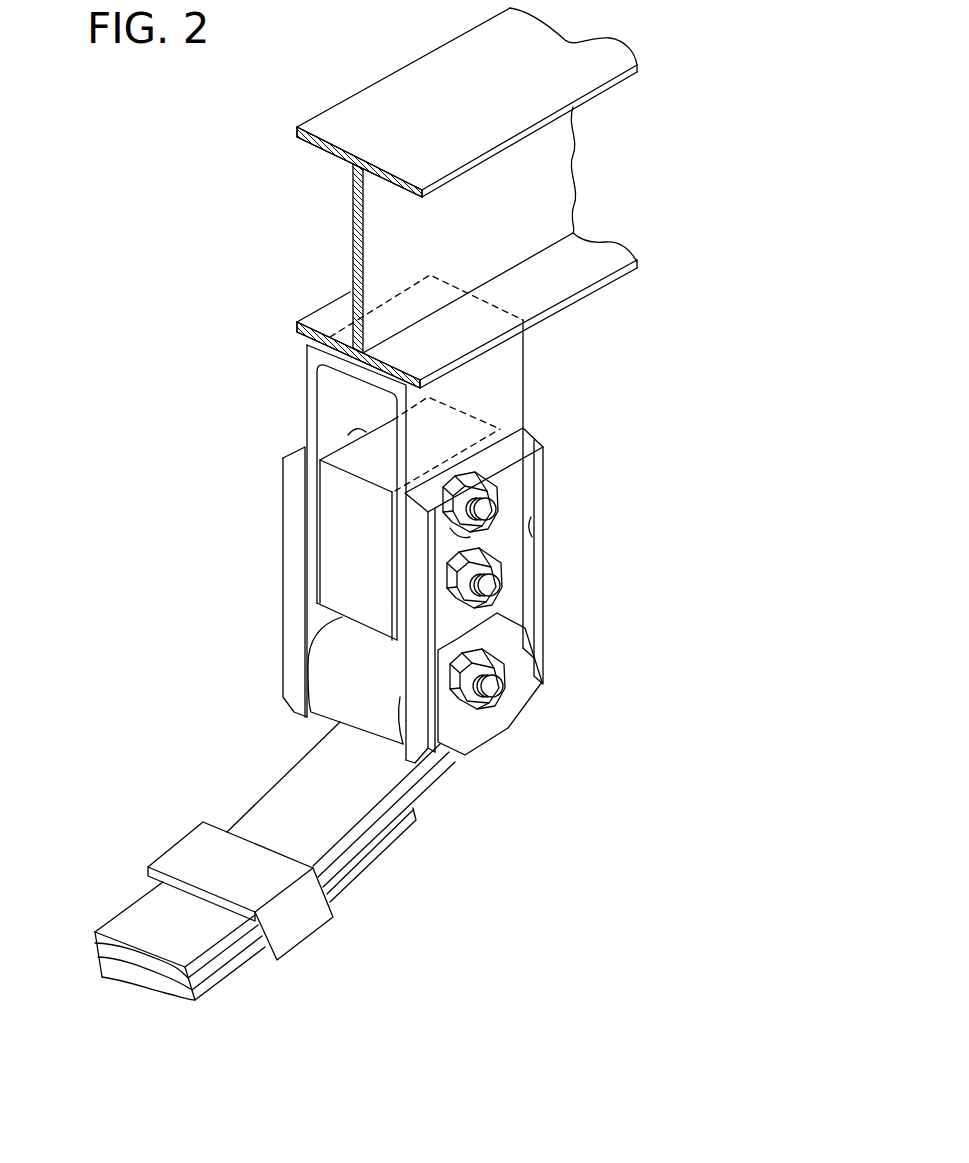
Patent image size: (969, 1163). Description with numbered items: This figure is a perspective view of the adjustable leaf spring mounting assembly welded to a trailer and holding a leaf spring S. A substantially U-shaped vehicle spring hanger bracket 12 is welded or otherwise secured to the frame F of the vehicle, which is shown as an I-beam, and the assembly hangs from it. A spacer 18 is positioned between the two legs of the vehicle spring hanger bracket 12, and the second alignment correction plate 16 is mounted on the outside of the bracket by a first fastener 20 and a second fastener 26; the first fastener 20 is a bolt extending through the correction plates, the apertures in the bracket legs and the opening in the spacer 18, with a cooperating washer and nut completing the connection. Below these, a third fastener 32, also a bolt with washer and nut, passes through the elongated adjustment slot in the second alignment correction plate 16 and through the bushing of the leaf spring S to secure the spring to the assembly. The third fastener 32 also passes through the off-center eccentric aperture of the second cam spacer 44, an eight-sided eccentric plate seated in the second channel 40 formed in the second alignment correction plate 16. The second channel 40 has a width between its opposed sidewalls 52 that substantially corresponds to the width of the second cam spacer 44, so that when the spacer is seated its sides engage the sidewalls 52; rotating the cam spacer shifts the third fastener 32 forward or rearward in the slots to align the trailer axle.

The frame F is at (368, 215).
The vehicle spring hanger bracket 12 is at (308, 386).
The second alignment correction plate 16 is at (523, 428).
The spacer 18 is at (355, 552).
The first fastener 20 is at (490, 560).
The second fastener 26 is at (432, 560).
The opposed sidewalls 52 is at (490, 528).
The third fastener 32 is at (493, 672).
The second channel 40 is at (513, 588).
The second cam spacer 44 is at (507, 703).
The leaf spring S is at (373, 833).